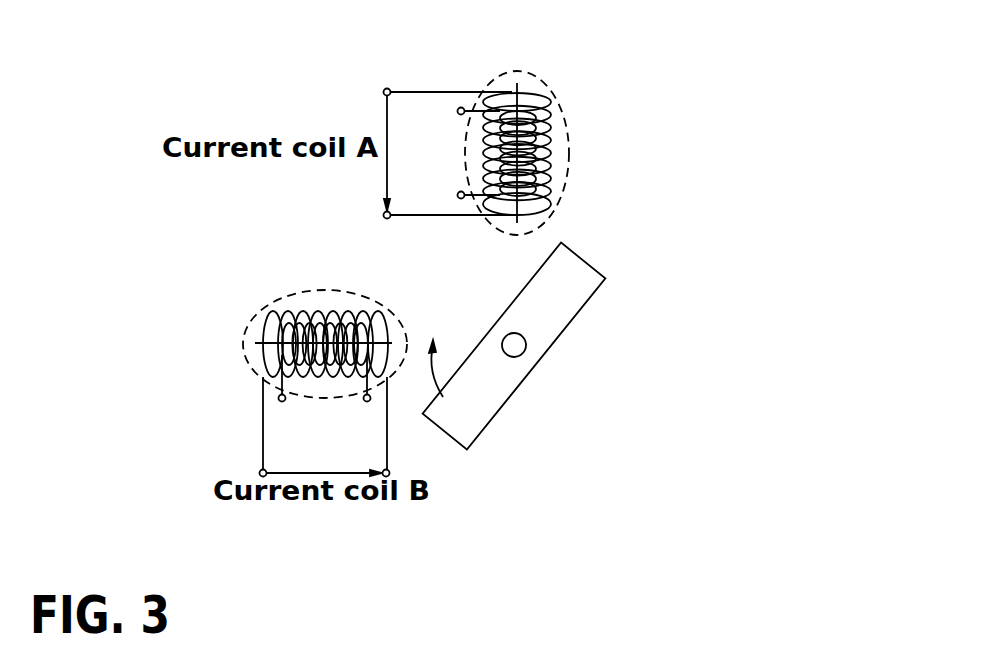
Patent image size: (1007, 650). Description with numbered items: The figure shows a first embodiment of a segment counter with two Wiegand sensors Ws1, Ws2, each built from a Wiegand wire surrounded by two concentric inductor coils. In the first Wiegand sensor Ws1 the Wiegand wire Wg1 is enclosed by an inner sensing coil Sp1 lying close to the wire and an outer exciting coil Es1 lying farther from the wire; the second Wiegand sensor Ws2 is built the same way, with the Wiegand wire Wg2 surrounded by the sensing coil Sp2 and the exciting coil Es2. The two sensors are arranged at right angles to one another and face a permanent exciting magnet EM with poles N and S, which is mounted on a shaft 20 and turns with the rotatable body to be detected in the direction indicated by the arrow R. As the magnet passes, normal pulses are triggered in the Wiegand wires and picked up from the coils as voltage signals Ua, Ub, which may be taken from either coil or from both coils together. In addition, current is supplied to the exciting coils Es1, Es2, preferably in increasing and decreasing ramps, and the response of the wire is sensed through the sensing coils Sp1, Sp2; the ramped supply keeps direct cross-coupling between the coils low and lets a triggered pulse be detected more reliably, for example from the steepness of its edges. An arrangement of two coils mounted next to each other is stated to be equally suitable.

The Wiegand sensor Ws1 is at (517, 73).
The sensing coil Sp1 is at (538, 127).
The exciting coil Es1 is at (550, 160).
The Wiegand wire Wg1 is at (517, 209).
The voltage signal Ua is at (461, 115).
The Wiegand sensor Ws2 is at (245, 345).
The sensing coil Sp2 is at (345, 332).
The exciting coil Es2 is at (265, 322).
The Wiegand wire Wg2 is at (275, 343).
The voltage signal Ub is at (358, 399).
The exciting magnet EM is at (553, 303).
The shaft 20 is at (515, 345).
The arrow indicating direction of rotation R is at (431, 351).